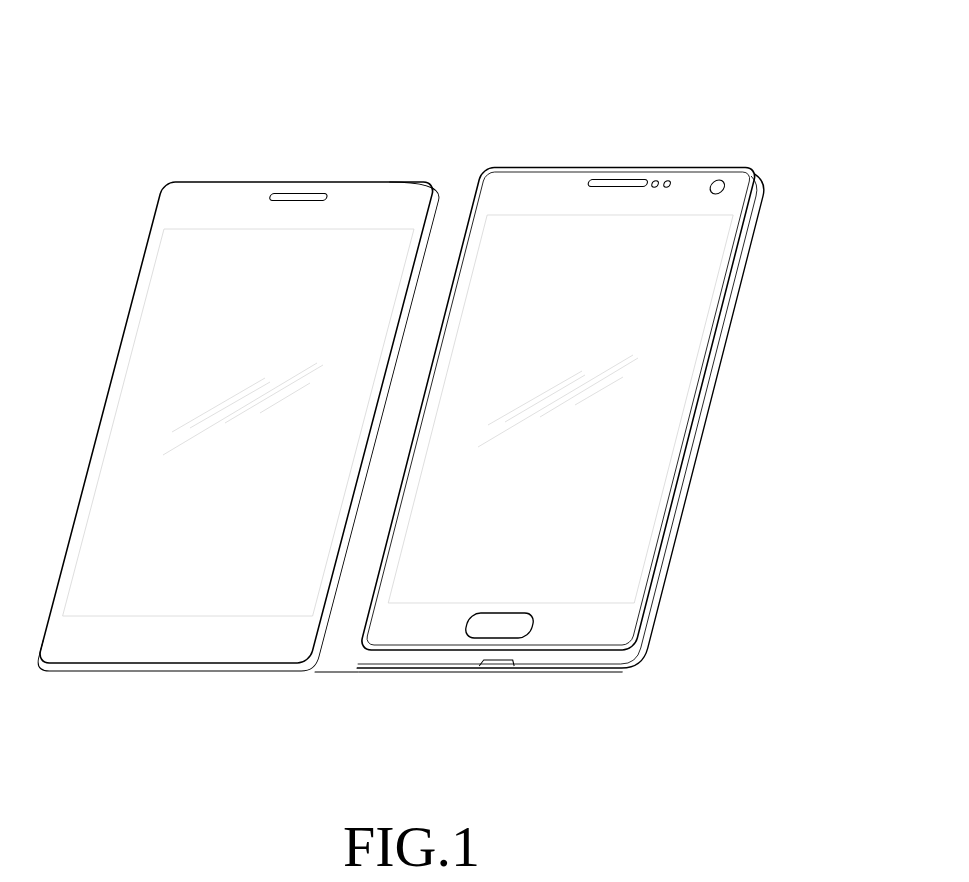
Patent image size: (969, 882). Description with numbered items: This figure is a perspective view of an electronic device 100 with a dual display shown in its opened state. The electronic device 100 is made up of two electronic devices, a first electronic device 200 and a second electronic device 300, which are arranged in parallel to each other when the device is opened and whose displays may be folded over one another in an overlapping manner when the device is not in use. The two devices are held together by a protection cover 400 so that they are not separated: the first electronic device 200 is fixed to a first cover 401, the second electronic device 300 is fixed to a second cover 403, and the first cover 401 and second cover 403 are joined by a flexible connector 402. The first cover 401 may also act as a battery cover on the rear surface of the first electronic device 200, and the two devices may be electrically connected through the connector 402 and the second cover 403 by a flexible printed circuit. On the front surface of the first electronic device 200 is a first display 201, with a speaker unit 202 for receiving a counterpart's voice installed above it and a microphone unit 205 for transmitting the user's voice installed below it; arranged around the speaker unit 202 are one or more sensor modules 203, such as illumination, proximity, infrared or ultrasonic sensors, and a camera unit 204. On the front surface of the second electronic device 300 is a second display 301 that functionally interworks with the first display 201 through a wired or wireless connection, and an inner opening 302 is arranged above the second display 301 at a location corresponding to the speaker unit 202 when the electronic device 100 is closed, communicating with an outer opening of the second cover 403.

The electronic device 100 is at (572, 74).
The first electronic device 200 is at (654, 149).
The first display 201 is at (672, 313).
The speaker unit 202 is at (607, 180).
The sensor module 203 is at (659, 181).
The camera unit 204 is at (719, 181).
The microphone unit 205 is at (463, 660).
The second electronic device 300 is at (372, 166).
The second display 301 is at (202, 243).
The inner opening 302 is at (286, 195).
The protection cover 400 is at (474, 186).
The first cover 401 is at (597, 673).
The flexible connector 402 is at (447, 203).
The second cover 403 is at (170, 672).